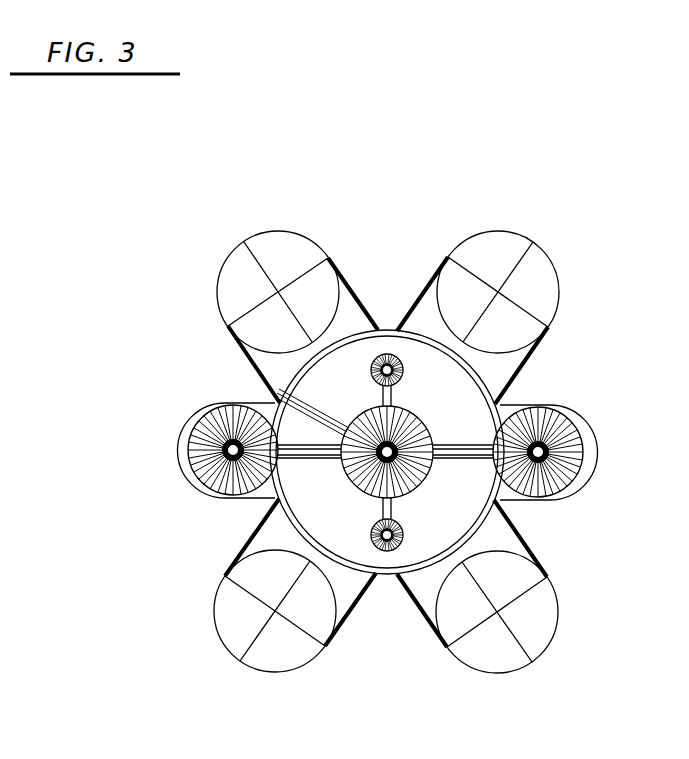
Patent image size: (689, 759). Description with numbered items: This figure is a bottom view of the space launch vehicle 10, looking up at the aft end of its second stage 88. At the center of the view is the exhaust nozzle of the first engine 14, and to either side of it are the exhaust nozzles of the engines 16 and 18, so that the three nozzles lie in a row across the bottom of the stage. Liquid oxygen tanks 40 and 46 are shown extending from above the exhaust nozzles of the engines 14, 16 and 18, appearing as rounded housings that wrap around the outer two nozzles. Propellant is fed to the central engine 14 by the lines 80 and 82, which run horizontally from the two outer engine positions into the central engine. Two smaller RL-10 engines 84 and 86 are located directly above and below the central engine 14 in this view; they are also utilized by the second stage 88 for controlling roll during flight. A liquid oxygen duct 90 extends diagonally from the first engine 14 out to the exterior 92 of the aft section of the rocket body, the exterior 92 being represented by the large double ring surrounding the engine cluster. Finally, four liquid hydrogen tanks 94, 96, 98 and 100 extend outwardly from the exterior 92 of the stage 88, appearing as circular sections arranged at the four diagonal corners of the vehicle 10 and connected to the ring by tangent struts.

The launch vehicle 10 is at (582, 247).
The first engine 14 is at (433, 430).
The engine 16 is at (208, 485).
The engine 18 is at (577, 433).
The liquid oxygen tank 40 is at (183, 420).
The liquid oxygen tank 46 is at (583, 492).
The line 80 is at (295, 453).
The line 82 is at (448, 455).
The RL-10 engine 84 is at (377, 353).
The RL-10 engine 86 is at (402, 547).
The second stage 88 is at (455, 400).
The liquid oxygen duct 90 is at (275, 393).
The exterior 92 is at (348, 328).
The liquid hydrogen tank 94 is at (272, 245).
The liquid hydrogen tank 96 is at (507, 233).
The liquid hydrogen tank 98 is at (542, 612).
The liquid hydrogen tank 100 is at (232, 622).